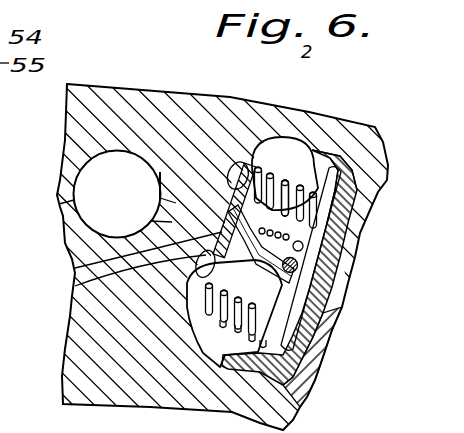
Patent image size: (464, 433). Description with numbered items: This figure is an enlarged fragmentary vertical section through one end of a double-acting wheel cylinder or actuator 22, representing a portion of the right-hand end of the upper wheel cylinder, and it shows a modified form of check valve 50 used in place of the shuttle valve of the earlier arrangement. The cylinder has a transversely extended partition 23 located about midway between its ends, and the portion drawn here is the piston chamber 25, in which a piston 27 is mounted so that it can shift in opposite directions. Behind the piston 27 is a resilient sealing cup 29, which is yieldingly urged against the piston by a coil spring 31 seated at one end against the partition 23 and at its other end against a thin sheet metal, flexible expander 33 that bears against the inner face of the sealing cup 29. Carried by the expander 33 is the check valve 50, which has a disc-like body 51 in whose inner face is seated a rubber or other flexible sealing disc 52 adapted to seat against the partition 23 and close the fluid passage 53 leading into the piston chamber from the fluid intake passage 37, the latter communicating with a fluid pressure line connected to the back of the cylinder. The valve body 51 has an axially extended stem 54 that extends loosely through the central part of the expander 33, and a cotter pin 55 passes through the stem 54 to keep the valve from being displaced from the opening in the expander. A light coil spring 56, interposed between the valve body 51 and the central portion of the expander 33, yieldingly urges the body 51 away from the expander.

The actuator 22 is at (127, 82).
The transversely extended partition 23 is at (167, 334).
The piston chamber 25 is at (289, 147).
The piston 27 is at (366, 185).
The resilient sealing cup 29 is at (359, 173).
The coil spring 31 is at (286, 176).
The expander 33 is at (333, 160).
The fluid intake passage 37 is at (90, 187).
The check valve 50 is at (286, 203).
The disc-like body 51 is at (236, 315).
The flexible sealing disc 52 is at (76, 286).
The fluid passage 53 is at (76, 268).
The axially extended stem 54 is at (300, 252).
The cotter pin 55 is at (297, 266).
The light coil spring 56 is at (305, 306).